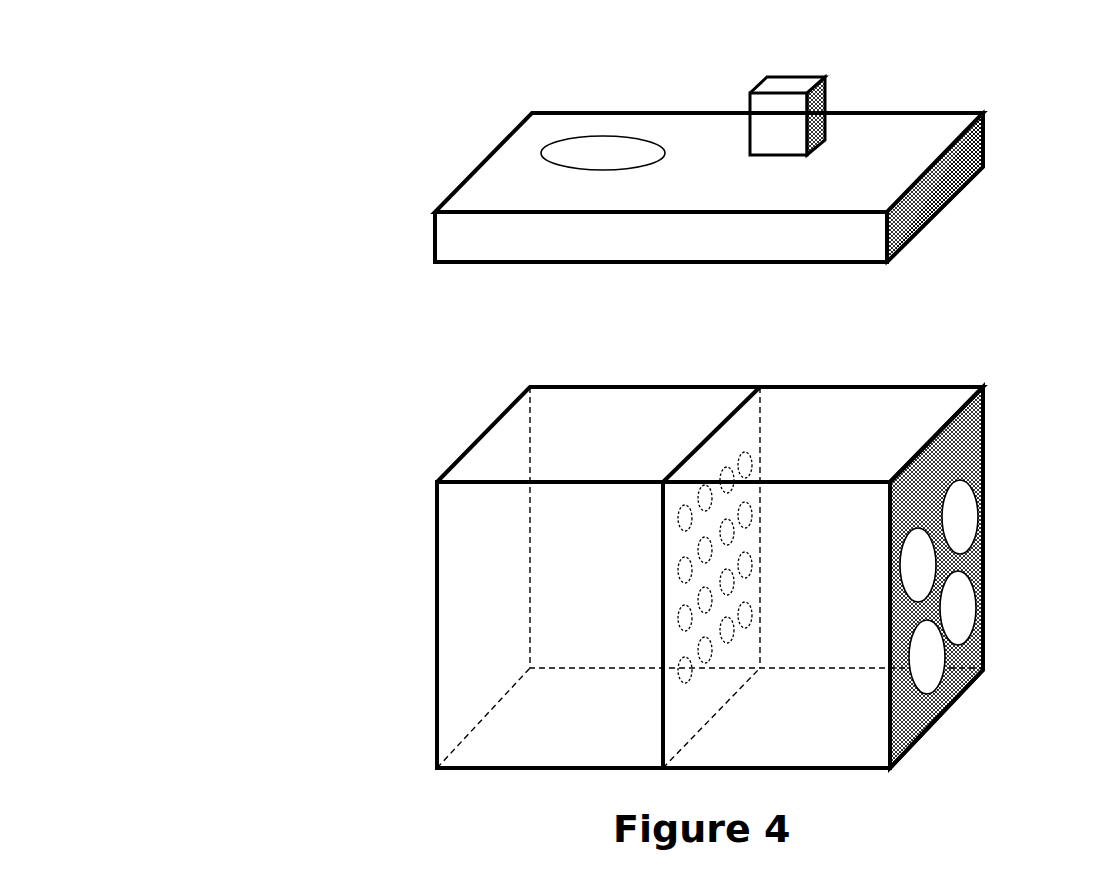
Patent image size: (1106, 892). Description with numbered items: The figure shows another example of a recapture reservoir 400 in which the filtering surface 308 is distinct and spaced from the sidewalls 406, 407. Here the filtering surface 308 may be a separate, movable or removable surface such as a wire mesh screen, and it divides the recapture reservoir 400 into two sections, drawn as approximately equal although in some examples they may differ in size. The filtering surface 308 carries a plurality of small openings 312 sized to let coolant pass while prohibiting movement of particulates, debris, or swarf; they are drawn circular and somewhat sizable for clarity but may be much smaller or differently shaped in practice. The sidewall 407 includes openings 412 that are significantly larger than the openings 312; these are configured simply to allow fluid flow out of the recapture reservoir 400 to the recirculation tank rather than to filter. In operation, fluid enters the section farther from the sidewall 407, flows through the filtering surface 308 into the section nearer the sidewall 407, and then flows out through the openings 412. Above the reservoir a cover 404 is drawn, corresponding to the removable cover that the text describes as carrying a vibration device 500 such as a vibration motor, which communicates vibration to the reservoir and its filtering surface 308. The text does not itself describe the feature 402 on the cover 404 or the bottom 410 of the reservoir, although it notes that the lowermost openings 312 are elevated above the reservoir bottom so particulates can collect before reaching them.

The recapture reservoir 400 is at (425, 585).
The recess 402 is at (603, 132).
The lid 404 is at (467, 229).
The sidewall 406 is at (435, 623).
The sidewall 407 is at (915, 717).
The bottom 410 is at (815, 742).
The openings 412 is at (949, 567).
The filtering surface 308 is at (748, 422).
The openings 312 is at (722, 600).
The vibration device 500 is at (827, 107).